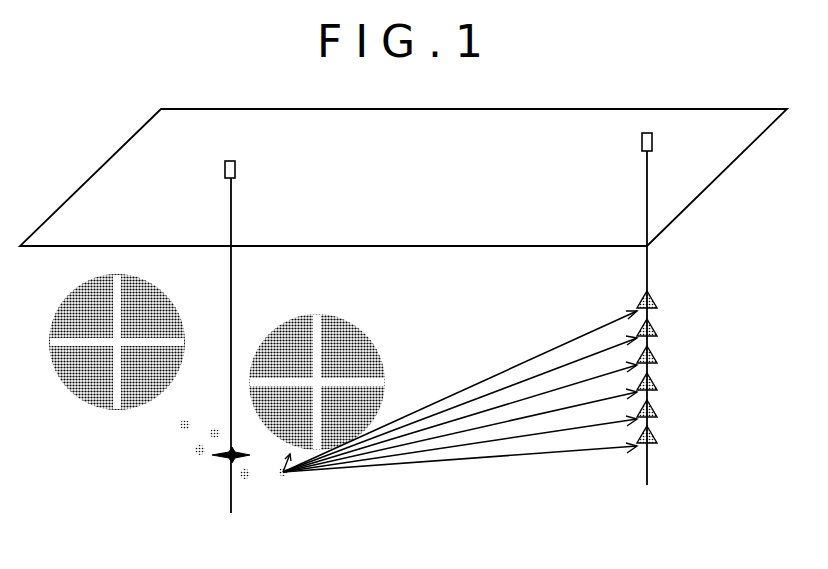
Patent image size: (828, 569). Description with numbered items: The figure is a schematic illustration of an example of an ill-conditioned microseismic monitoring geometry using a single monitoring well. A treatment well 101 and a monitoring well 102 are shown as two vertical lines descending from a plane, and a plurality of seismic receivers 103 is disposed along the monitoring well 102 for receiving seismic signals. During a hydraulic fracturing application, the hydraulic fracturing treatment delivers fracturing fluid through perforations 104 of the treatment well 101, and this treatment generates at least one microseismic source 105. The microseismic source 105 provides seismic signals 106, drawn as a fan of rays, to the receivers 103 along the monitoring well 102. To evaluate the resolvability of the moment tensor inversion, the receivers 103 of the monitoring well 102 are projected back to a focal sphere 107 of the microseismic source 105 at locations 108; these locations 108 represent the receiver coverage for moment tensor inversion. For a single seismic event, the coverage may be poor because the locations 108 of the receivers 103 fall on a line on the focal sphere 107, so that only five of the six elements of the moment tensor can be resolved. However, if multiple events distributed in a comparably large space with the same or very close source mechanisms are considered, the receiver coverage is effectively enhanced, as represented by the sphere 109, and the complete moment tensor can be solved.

The treatment well 101 is at (236, 170).
The monitoring well 102 is at (641, 142).
The seismic receivers 103 is at (657, 358).
The perforations 104 is at (220, 456).
The microseismic source 105 is at (282, 480).
The seismic signals 106 is at (452, 462).
The focal sphere 107 is at (355, 342).
The locations 108 is at (283, 350).
The sphere 109 is at (153, 300).